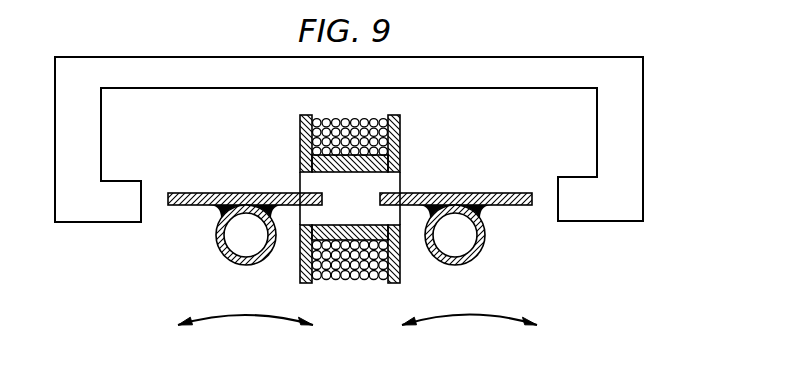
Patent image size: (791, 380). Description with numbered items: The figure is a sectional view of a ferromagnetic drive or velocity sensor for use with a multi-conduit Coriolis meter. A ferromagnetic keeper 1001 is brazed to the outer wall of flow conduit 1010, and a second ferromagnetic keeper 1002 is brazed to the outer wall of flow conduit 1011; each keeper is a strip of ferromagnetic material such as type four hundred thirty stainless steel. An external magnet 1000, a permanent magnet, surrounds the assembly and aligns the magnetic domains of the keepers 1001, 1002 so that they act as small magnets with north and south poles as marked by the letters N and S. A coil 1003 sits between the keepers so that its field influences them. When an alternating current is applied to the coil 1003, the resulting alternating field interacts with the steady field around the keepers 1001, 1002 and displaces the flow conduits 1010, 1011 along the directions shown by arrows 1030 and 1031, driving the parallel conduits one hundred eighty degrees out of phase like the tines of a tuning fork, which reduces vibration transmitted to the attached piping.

The external magnet 1000 is at (589, 55).
The ferromagnetic keeper 1001 is at (222, 193).
The ferromagnetic keeper 1002 is at (464, 193).
The coil 1003 is at (360, 118).
The flow conduit 1010 is at (219, 238).
The flow conduit 1011 is at (484, 240).
The arrow 1030 is at (245, 318).
The arrow 1031 is at (470, 316).